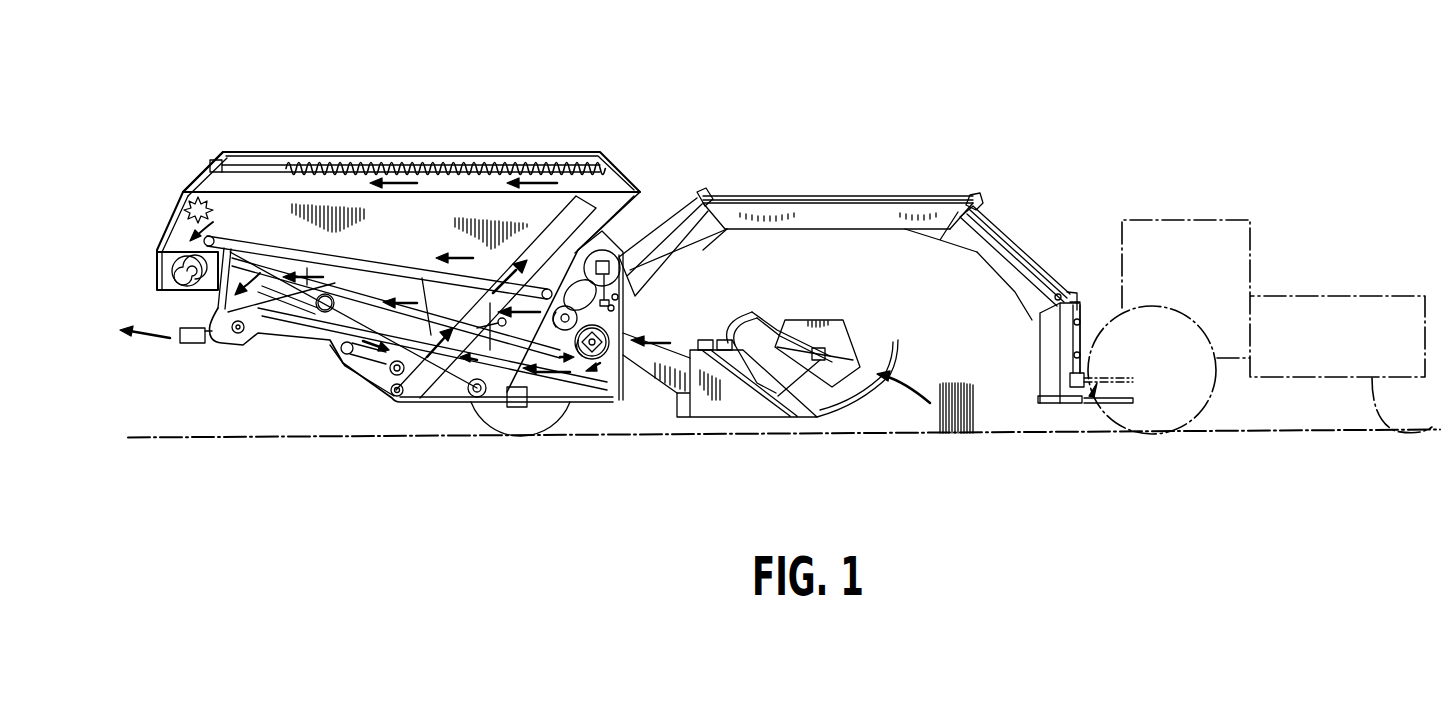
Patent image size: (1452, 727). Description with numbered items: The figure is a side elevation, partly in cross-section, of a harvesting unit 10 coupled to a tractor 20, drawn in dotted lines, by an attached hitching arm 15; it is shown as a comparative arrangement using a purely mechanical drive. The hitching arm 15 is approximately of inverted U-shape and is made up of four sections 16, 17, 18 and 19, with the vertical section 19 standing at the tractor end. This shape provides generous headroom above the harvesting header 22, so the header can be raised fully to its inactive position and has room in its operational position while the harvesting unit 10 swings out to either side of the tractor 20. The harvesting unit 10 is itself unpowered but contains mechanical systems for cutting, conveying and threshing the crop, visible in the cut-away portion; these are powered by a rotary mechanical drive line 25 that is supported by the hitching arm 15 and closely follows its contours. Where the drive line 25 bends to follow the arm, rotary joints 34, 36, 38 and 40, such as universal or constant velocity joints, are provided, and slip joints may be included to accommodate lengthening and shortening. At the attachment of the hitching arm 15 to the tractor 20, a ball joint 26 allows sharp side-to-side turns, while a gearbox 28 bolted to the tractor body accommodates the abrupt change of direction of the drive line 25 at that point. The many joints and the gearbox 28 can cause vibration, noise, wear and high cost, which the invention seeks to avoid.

The harvesting unit 10 is at (451, 126).
The hitching arm 15 is at (833, 213).
The section of hitching arm 16 is at (683, 261).
The section of hitching arm 17 is at (812, 230).
The section of hitching arm 18 is at (998, 270).
The vertical section 19 is at (1040, 373).
The tractor 20 is at (1205, 279).
The harvesting header 22 is at (845, 334).
The mechanical drive line 25 is at (638, 260).
The ball joint 26 is at (1077, 404).
The gearbox 28 is at (1086, 376).
The rotary joint 34 is at (1077, 302).
The rotary joint 36 is at (975, 197).
The rotary joint 38 is at (703, 195).
The rotary joint 40 is at (620, 297).